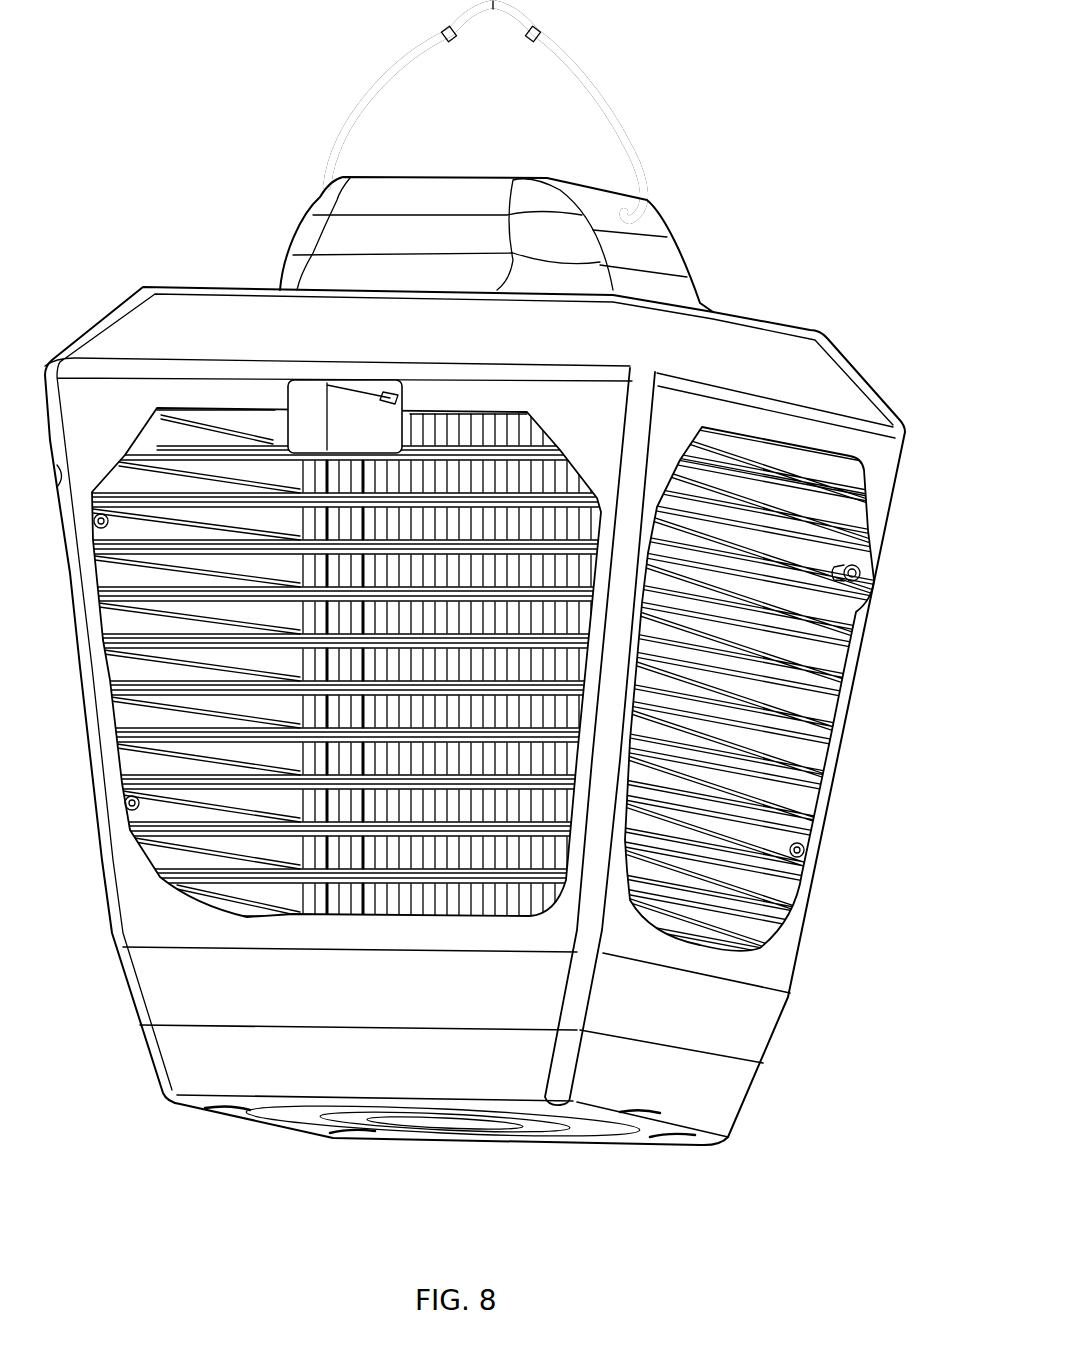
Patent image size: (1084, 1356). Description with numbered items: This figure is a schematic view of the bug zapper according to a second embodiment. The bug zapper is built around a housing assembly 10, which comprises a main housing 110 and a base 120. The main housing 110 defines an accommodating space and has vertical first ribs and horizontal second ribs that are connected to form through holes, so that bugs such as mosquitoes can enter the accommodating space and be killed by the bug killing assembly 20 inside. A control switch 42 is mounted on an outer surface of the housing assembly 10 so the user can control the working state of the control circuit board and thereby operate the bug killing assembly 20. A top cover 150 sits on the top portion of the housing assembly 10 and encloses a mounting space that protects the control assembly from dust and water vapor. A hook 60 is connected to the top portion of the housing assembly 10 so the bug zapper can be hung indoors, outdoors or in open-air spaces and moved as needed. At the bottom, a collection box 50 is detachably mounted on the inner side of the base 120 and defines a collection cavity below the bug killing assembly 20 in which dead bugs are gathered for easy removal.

The housing assembly 10 is at (507, 609).
The bug killing assembly 20 is at (568, 660).
The control switch 42 is at (380, 390).
The collection box 50 is at (493, 1135).
The hook 60 is at (625, 130).
The main housing 110 is at (840, 766).
The base 120 is at (755, 1050).
The top cover 150 is at (683, 293).